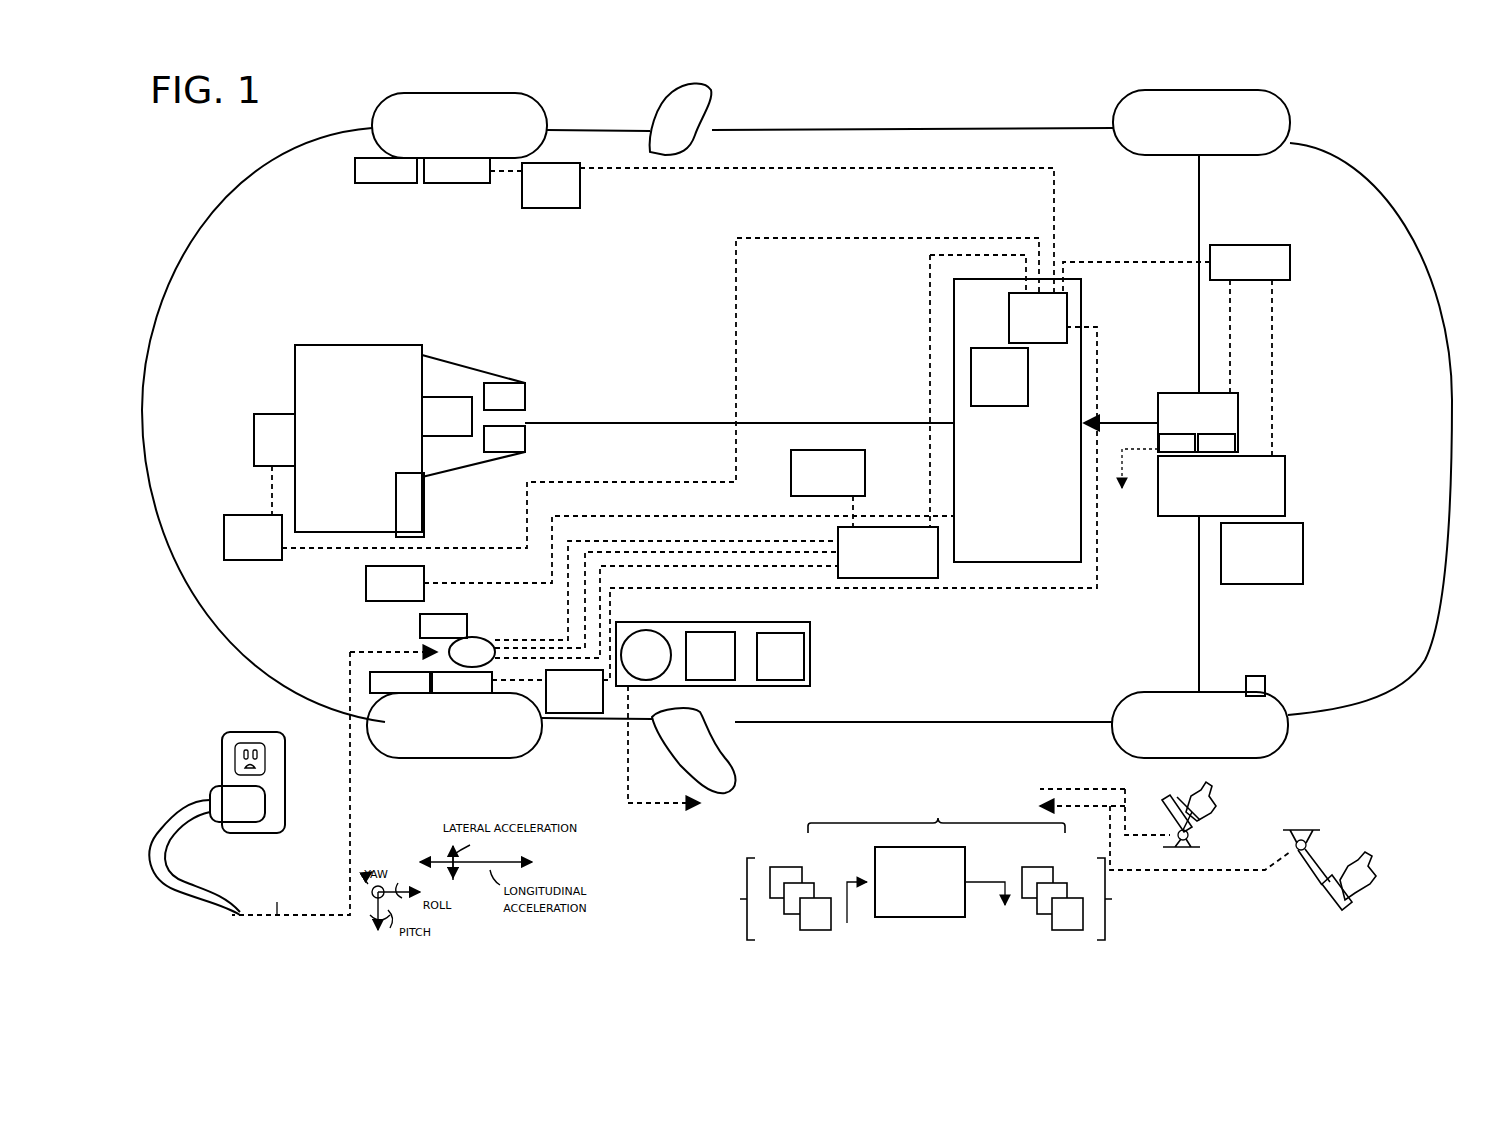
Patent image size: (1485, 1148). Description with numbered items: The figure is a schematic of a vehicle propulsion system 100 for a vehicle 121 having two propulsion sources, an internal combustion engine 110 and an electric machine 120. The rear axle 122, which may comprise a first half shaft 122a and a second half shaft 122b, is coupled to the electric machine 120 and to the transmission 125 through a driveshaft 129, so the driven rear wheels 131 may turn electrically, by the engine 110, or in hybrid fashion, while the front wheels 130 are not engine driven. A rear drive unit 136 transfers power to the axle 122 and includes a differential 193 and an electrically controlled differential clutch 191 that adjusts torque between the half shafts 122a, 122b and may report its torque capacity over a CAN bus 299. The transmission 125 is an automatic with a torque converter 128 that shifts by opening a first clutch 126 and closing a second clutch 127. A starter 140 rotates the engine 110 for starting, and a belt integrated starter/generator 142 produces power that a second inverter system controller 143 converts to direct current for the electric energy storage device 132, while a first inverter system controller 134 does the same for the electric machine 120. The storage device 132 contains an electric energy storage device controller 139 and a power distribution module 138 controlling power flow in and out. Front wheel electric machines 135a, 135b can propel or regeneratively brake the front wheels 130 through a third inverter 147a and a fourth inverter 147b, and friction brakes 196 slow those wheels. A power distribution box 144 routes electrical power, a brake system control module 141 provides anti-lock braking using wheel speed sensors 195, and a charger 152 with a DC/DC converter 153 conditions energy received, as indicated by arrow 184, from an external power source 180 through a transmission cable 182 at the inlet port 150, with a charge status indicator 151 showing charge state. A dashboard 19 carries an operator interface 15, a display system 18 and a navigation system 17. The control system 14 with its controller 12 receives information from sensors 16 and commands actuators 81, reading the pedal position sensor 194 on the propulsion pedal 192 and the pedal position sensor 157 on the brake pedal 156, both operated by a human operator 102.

The vehicle propulsion system 100 is at (947, 102).
The front wheels 130 is at (465, 93).
The rear wheels 131 is at (1238, 90).
The friction brakes 196 is at (392, 425).
The electric machine 135a is at (473, 170).
The third inverter 147a is at (788, 228).
The electric machine 135b is at (489, 682).
The fourth inverter 147b is at (821, 520).
The first half shaft 122a is at (1199, 205).
The rear axle 122 is at (1228, 232).
The second half shaft 122b is at (1199, 620).
The first inverter system controller 134 is at (1176, 350).
The transmission 125 is at (447, 362).
The first clutch 126 is at (504, 396).
The second clutch 127 is at (504, 439).
The torque converter 128 is at (447, 416).
The driveshaft 129 is at (630, 423).
The internal combustion engine 110 is at (358, 438).
The belt integrated starter/generator 142 is at (274, 464).
The starter 140 is at (396, 480).
The second inverter system controller 143 is at (631, 399).
The power distribution box 144 is at (660, 558).
The DC/DC converter 153 is at (828, 488).
The electric energy storage device 132 is at (1017, 420).
The power distribution module 138 is at (1038, 318).
The electric energy storage device controller 139 is at (999, 377).
The rear drive unit 136 is at (1198, 422).
The electrically controlled differential clutch 191 is at (1177, 443).
The differential 193 is at (1216, 443).
The CAN bus 299 is at (1137, 449).
The electric machine 120 is at (1221, 486).
The brake system control module 141 is at (1262, 553).
The charger 152 is at (932, 416).
The dashboard 19 is at (752, 622).
The operator interface 15 is at (646, 655).
The display system 18 is at (710, 656).
The onboard navigation system 17 is at (780, 656).
The inlet port 150 is at (482, 637).
The charge status indicator 151 is at (349, 764).
The wheel speed sensor 195 is at (1256, 676).
The vehicle 121 is at (1405, 722).
The power source 180 is at (222, 757).
The electrical energy transmission cable 182 is at (160, 832).
The arrow 184 is at (277, 896).
The control system 14 is at (966, 802).
The controller 12 is at (926, 885).
The sensors 16 is at (750, 899).
The actuators 81 is at (1106, 899).
The pedal 192 is at (1163, 820).
The human operator 102 is at (1195, 800).
The pedal position sensor 194 is at (1192, 836).
The pedal position sensor 157 is at (1296, 846).
The brake pedal 156 is at (1325, 898).